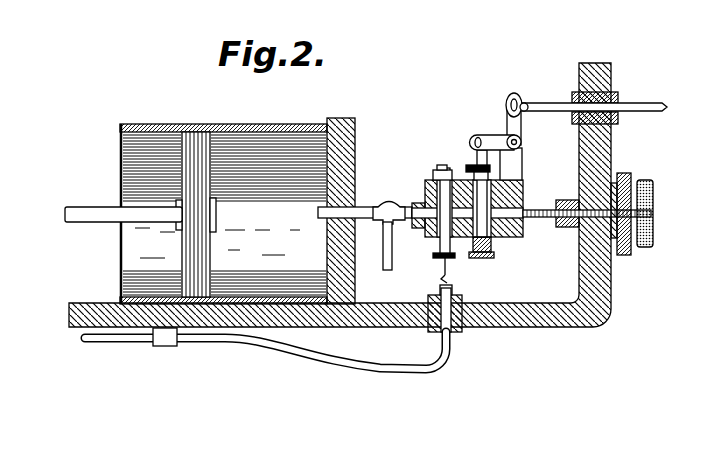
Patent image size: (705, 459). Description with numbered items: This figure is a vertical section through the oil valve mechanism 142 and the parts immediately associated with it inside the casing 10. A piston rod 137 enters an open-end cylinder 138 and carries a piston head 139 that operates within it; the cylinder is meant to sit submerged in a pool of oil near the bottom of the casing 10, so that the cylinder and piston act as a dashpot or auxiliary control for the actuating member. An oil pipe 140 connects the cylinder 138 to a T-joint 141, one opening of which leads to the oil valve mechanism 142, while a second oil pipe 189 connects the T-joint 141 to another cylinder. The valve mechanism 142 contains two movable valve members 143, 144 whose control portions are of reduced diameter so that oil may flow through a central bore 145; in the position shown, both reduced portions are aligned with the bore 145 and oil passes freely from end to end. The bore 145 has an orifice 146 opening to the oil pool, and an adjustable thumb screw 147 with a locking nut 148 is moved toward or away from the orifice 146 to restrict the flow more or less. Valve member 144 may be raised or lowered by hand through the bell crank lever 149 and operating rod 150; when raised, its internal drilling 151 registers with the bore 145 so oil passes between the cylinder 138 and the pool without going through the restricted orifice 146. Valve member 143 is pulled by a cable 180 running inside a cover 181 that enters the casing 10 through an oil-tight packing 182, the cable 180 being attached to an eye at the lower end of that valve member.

The casing 10 is at (566, 326).
The piston rod 137 is at (82, 224).
The open-end cylinder 138 is at (231, 214).
The piston head 139 is at (229, 124).
The oil pipe 140 is at (362, 207).
The T-joint 141 is at (386, 203).
The oil valve mechanism 142 is at (465, 178).
The movable valve member 143 is at (438, 250).
The movable valve member 144 is at (490, 240).
The central bore 145 is at (516, 205).
The orifice 146 is at (521, 222).
The adjustable thumb screw 147 is at (671, 182).
The locking nut 148 is at (626, 174).
The bell crank lever 149 is at (505, 116).
The operating rod 150 is at (643, 102).
The internal drilling 151 is at (484, 260).
The cable 180 is at (468, 298).
The cover 181 is at (438, 372).
The oil-tight packing 182 is at (459, 332).
The oil pipe 189 is at (383, 266).